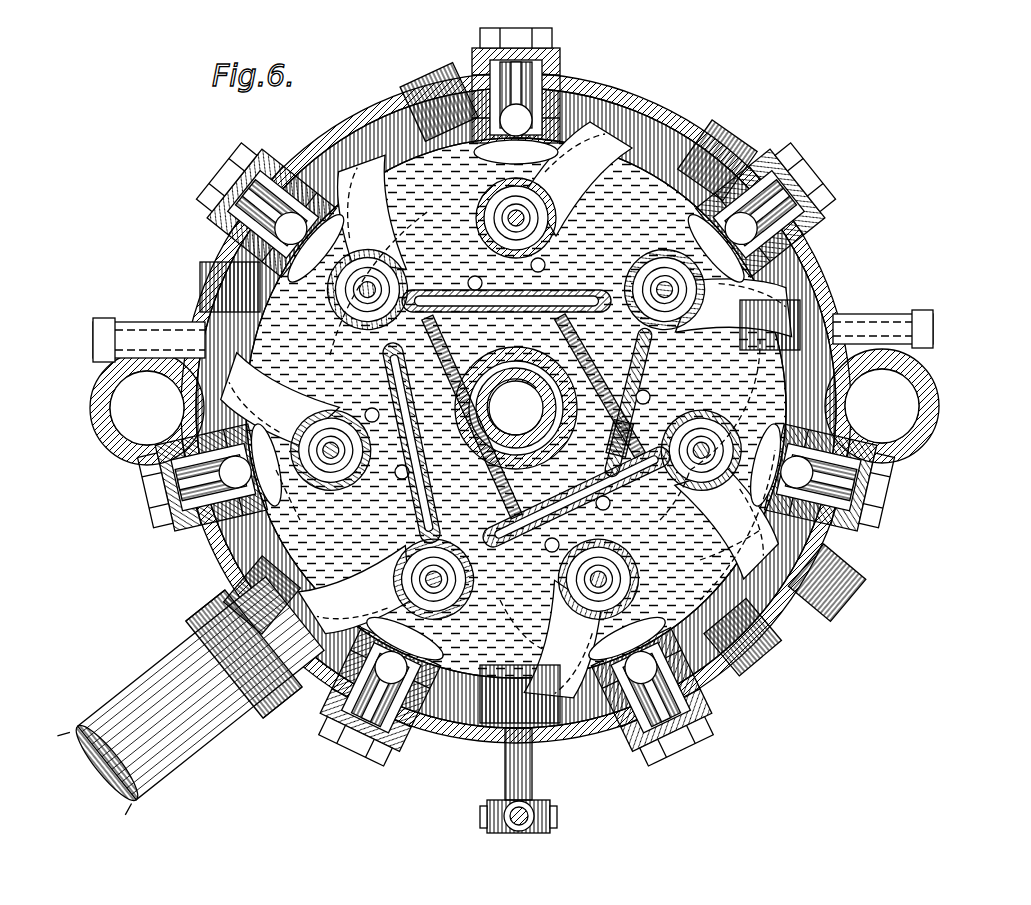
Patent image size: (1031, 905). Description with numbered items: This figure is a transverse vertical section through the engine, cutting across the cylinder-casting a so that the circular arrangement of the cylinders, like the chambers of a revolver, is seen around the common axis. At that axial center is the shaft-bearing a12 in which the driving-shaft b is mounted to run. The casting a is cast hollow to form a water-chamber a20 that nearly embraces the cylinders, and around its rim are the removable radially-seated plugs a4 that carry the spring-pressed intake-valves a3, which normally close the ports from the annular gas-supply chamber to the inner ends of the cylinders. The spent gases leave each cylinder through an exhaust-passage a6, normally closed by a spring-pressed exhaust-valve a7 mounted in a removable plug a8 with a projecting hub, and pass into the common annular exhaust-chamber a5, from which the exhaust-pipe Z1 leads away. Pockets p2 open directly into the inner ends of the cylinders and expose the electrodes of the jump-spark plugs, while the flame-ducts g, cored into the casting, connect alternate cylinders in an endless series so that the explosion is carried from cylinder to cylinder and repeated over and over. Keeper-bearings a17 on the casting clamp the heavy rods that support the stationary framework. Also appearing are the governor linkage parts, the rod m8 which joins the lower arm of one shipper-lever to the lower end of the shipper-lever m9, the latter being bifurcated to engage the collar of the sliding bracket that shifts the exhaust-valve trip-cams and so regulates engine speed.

The cylinder-casting a is at (650, 108).
The intake-valve a3 is at (546, 114).
The removable radially-seated plug a4 is at (560, 40).
The annular exhaust-chamber a5 is at (176, 598).
The exhaust-passage a6 is at (600, 112).
The exhaust-valve a7 is at (522, 216).
The removable plug a8 is at (422, 561).
The shaft-bearing a12 is at (690, 495).
The keeper-bearing a17 is at (100, 406).
The water-chamber a20 is at (720, 360).
The pocket p2 is at (440, 92).
The flame-duct g is at (650, 312).
The driving-shaft b is at (398, 405).
The rod m8 is at (485, 816).
The shipper-lever m9 is at (534, 770).
The exhaust-pipe Z1 is at (128, 726).